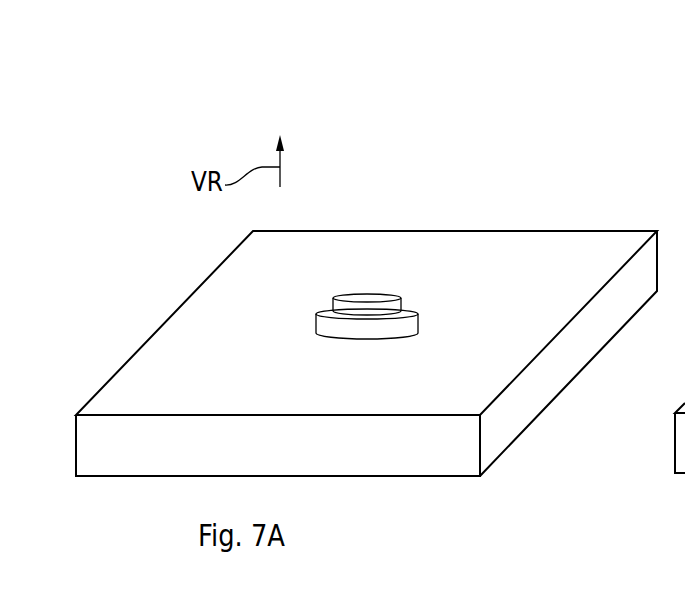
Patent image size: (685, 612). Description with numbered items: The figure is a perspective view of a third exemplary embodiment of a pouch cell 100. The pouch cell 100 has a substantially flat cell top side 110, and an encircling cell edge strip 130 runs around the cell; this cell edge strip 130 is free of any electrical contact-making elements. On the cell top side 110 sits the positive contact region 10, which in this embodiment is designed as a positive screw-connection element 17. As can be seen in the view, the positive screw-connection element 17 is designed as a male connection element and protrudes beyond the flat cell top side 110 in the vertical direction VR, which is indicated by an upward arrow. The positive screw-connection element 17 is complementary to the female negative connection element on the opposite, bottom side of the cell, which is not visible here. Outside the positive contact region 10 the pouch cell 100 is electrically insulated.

The pouch cell 100 is at (415, 96).
The cell top side 110 is at (208, 298).
The encircling cell edge strip 130 is at (590, 332).
The positive contact region 10 is at (432, 260).
The positive screw-connection element 17 is at (367, 304).